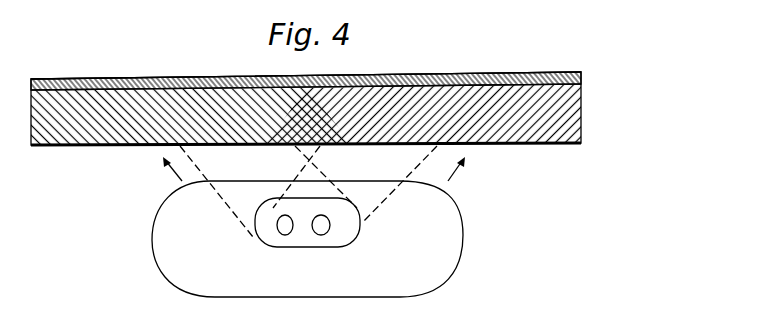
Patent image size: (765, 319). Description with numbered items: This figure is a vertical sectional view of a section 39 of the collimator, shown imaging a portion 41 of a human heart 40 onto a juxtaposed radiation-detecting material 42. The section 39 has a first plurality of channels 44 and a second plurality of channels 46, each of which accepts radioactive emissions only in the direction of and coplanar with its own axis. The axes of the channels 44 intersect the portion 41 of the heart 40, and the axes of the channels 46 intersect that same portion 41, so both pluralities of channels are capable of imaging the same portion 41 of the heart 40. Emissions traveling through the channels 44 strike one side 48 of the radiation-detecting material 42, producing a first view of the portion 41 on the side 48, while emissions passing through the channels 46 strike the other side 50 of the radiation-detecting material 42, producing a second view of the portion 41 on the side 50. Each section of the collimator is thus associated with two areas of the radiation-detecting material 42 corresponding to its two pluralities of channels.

The section 39 is at (581, 124).
The other side of radiation-detecting material 50 is at (126, 78).
The radiation-detecting material 42 is at (225, 78).
The one side of radiation-detecting material 48 is at (467, 75).
The channels 46 is at (164, 174).
The channels 44 is at (465, 174).
The heart 40 is at (265, 243).
The portion of heart 41 is at (313, 247).